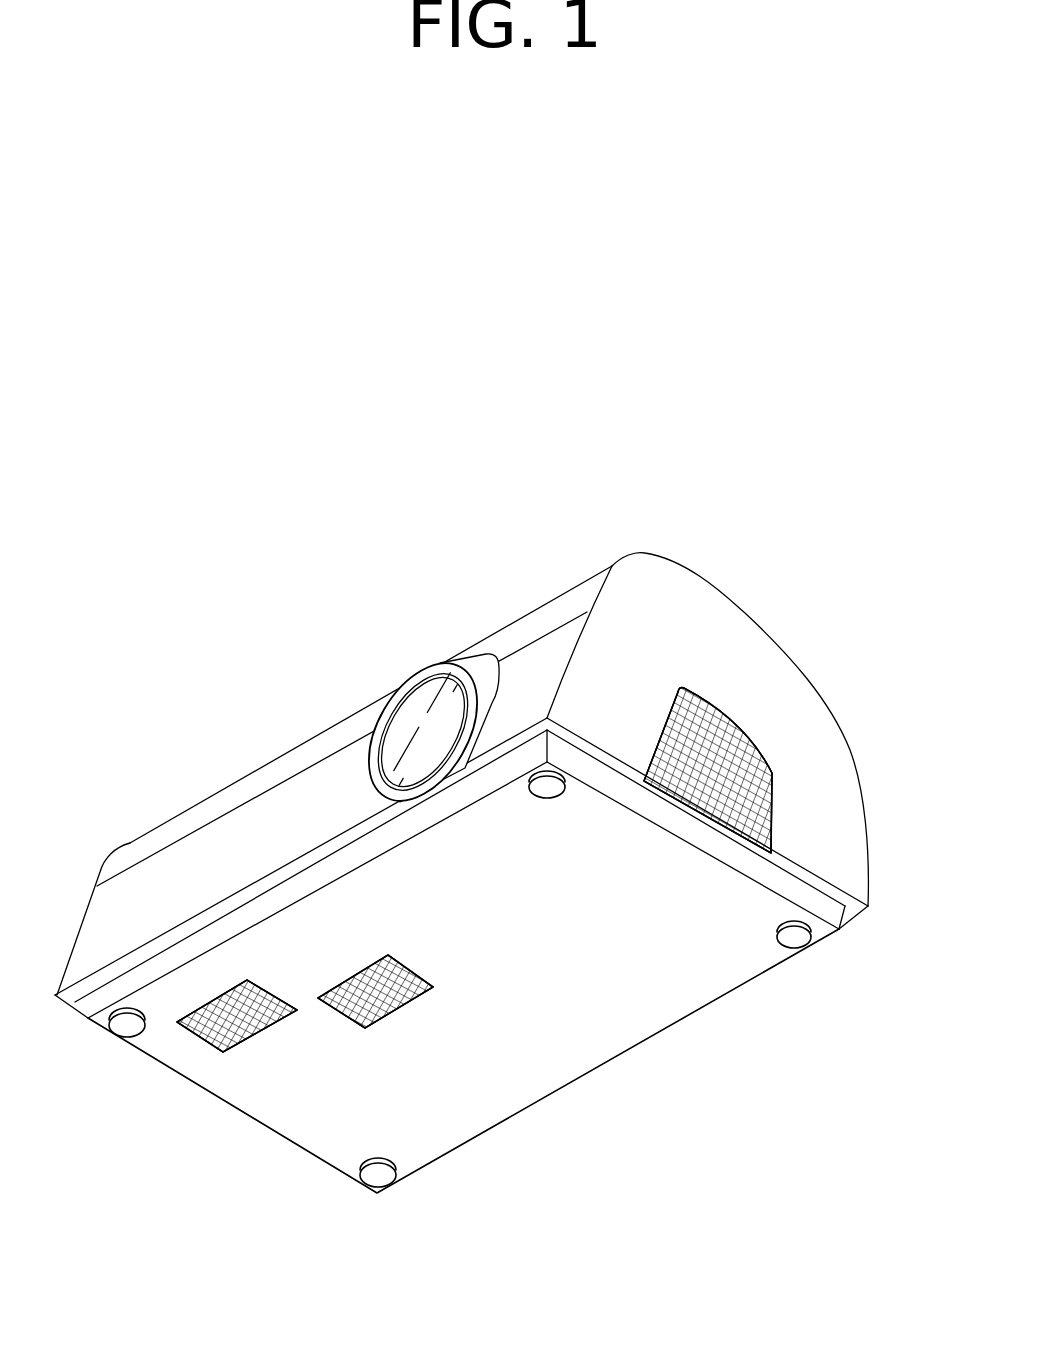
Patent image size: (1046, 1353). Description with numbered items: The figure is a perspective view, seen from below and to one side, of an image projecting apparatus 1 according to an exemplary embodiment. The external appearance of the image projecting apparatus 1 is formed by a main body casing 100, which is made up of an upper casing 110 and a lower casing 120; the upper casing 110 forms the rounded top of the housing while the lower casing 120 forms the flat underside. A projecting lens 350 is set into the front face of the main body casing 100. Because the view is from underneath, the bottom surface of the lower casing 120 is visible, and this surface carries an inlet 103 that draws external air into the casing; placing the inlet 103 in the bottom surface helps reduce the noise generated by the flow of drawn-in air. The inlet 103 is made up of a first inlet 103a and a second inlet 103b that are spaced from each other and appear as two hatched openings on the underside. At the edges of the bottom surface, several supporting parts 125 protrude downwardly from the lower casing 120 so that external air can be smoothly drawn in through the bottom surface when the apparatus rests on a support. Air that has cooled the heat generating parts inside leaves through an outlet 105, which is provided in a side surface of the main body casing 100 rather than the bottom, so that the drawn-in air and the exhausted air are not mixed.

The image projecting apparatus 1 is at (125, 675).
The main body casing 100 is at (745, 613).
The upper casing 110 is at (643, 560).
The lower casing 120 is at (597, 1067).
The outlet 105 is at (752, 743).
The projecting lens 350 is at (420, 683).
The inlet 103 is at (147, 1233).
The first inlet 103a is at (200, 1033).
The second inlet 103b is at (350, 1018).
The supporting parts 125 is at (383, 1178).